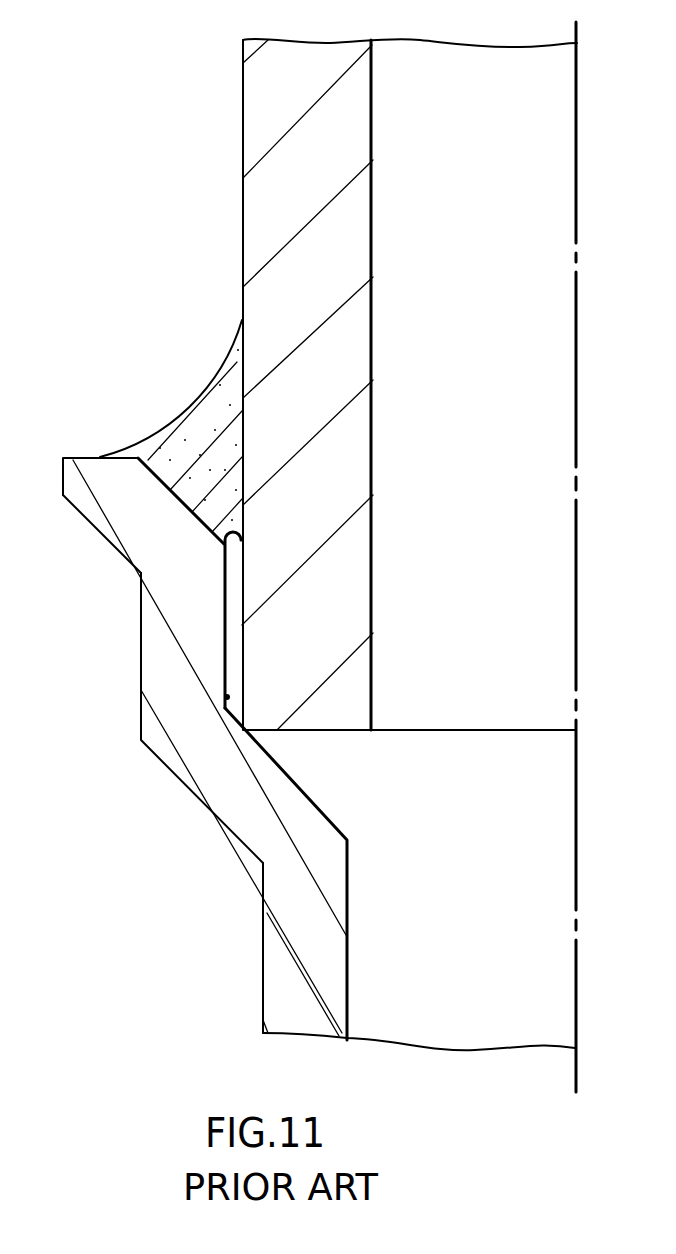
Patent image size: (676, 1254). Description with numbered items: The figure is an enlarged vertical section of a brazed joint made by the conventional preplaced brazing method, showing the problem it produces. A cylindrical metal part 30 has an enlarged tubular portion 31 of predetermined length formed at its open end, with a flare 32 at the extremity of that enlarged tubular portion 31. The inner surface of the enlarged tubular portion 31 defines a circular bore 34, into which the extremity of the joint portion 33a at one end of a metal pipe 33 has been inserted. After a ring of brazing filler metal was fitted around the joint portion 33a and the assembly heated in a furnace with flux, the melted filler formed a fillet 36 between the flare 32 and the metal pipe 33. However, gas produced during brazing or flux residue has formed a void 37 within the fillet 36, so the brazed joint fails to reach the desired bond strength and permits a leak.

The cylindrical metal part 30 is at (277, 970).
The enlarged tubular portion 31 is at (155, 677).
The flare 32 is at (125, 518).
The metal pipe 33 is at (257, 153).
The joint portion 33a is at (363, 657).
The circular bore 34 is at (222, 710).
The fillet 36 is at (195, 415).
The void 37 is at (233, 640).